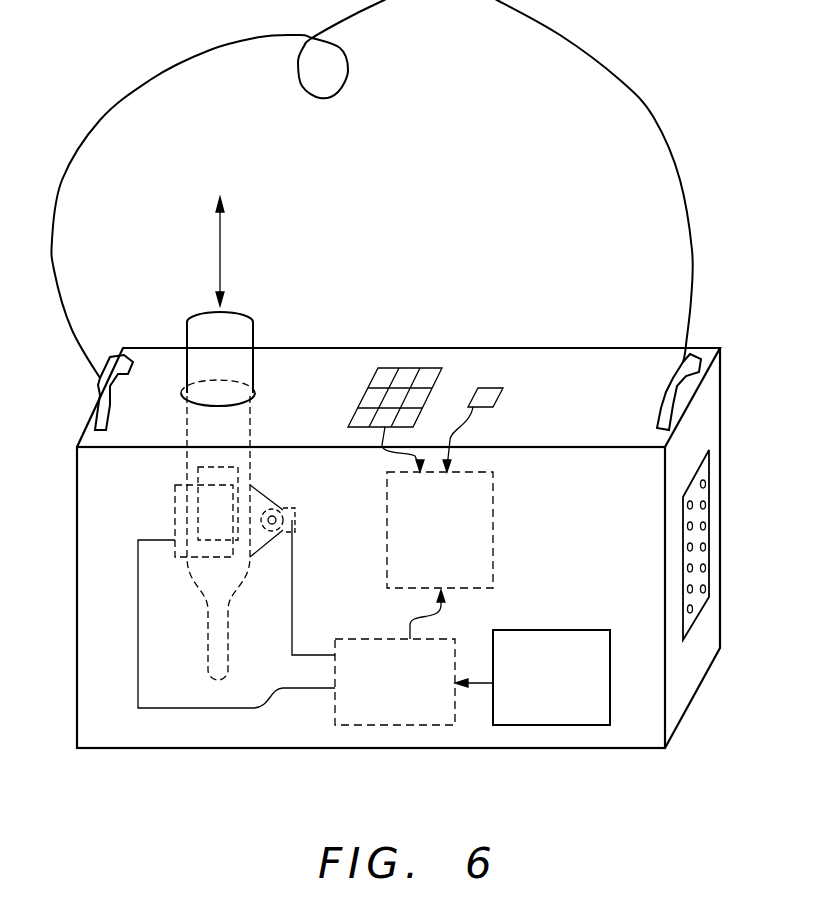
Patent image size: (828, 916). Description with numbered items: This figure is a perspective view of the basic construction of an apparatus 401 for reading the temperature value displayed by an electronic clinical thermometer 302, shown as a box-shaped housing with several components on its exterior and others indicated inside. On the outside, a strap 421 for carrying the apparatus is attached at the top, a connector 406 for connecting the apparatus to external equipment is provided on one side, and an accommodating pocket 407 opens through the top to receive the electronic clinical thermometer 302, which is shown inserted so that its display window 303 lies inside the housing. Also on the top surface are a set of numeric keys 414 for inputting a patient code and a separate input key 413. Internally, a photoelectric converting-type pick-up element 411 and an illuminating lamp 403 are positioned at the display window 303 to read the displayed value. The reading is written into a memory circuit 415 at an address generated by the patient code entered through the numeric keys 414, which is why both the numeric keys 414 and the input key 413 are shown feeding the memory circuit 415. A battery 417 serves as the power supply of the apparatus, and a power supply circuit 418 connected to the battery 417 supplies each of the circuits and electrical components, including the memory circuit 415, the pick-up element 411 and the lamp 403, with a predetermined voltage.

The electronic clinical thermometer 302 is at (240, 317).
The display window 303 is at (240, 475).
The apparatus 401 is at (125, 738).
The illuminating lamp 403 is at (283, 510).
The connector 406 is at (700, 453).
The accommodating pocket 407 is at (185, 460).
The photoelectric converting-type pick-up element 411 is at (175, 545).
The input key 413 is at (500, 393).
The numeric keys 414 is at (390, 368).
The memory circuit 415 is at (496, 502).
The battery 417 is at (533, 727).
The power supply circuit 418 is at (385, 727).
The strap 421 is at (654, 118).